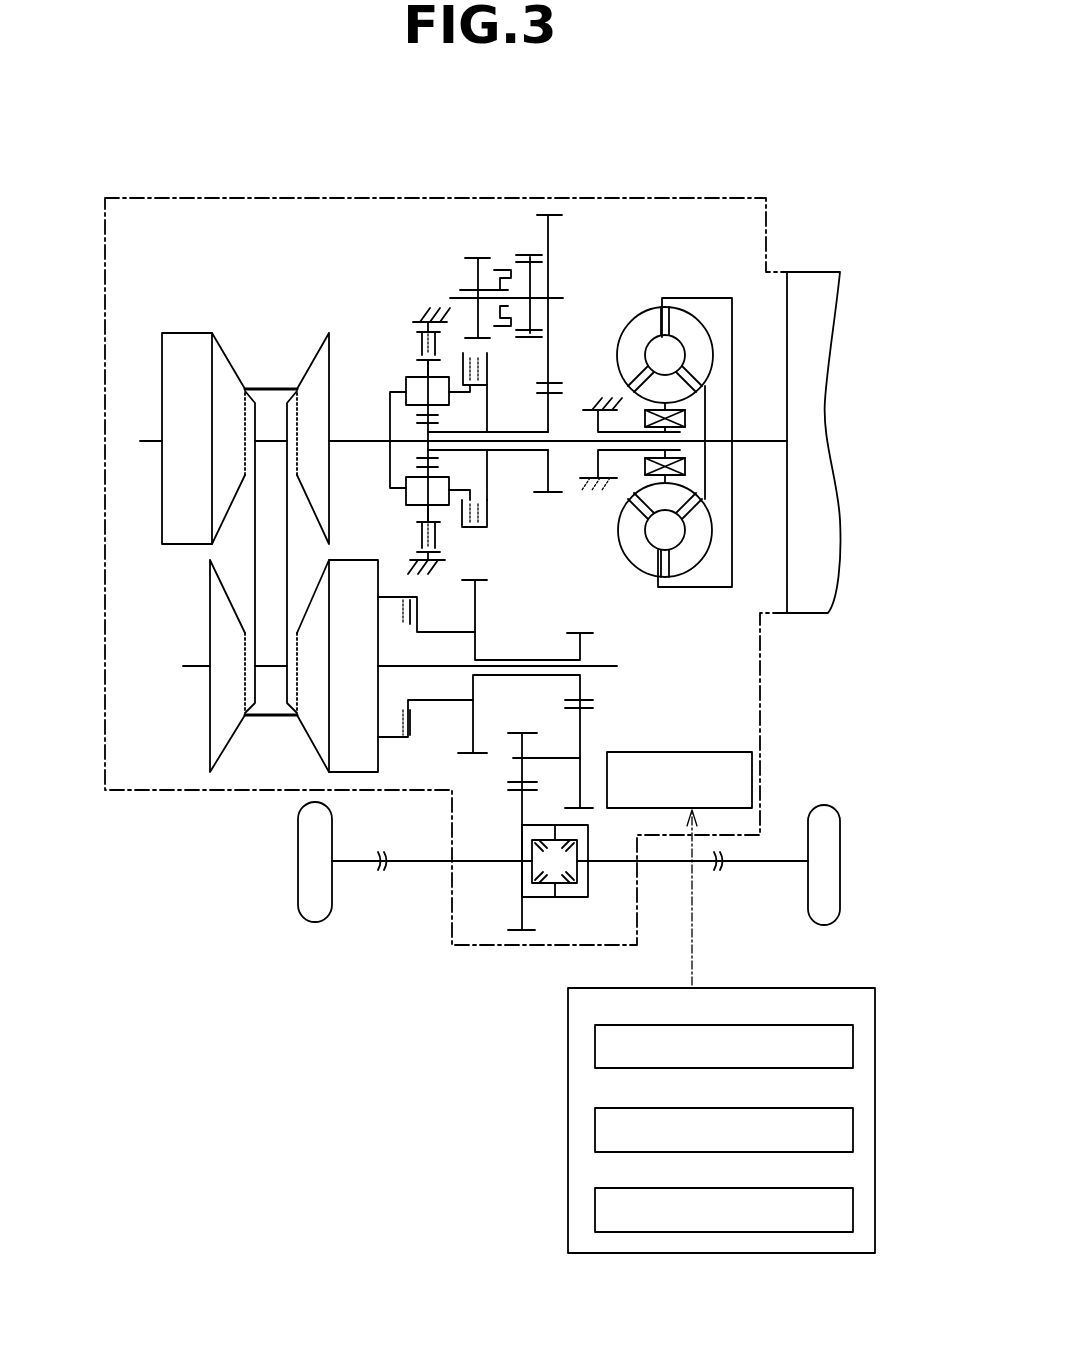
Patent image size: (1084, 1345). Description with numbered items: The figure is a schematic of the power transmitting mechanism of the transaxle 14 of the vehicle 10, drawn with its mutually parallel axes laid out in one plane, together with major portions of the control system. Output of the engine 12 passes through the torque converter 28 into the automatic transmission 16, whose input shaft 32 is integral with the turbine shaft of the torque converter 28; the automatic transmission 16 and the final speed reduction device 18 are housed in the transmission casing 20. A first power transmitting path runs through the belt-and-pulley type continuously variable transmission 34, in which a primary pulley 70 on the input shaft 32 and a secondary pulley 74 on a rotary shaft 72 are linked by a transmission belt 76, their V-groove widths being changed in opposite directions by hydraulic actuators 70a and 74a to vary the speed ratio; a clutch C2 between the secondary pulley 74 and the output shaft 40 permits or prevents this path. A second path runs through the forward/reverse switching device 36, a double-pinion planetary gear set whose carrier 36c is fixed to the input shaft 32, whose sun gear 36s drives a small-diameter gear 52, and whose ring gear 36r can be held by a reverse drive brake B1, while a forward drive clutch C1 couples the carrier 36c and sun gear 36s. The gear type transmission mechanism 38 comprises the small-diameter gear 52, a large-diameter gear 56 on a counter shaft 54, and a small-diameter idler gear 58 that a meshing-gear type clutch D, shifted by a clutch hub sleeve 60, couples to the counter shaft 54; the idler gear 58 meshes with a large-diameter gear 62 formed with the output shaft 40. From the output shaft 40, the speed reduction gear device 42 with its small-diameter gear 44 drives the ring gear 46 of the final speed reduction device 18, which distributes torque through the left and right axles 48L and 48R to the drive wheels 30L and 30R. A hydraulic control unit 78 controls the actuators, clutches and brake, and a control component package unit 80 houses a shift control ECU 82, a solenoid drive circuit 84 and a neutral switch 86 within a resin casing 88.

The vehicle 10 is at (788, 156).
The engine 12 is at (820, 285).
The transaxle 14 is at (200, 178).
The automatic transmission 16 is at (262, 266).
The final speed reduction device 18 is at (560, 900).
The transmission casing 20 is at (308, 195).
The torque converter 28 is at (695, 292).
The left drive wheel 30L is at (302, 884).
The right drive wheel 30R is at (832, 846).
The input shaft 32 is at (358, 435).
The belt-and-pulley type continuously variable transmission 34 is at (192, 310).
The forward/reverse switching device 36 is at (384, 304).
The carrier 36c is at (404, 380).
The sun gear 36s is at (410, 452).
The ring gear 36r is at (417, 532).
The gear type transmission mechanism 38 is at (585, 236).
The output shaft 40 is at (517, 656).
The speed reduction gear device 42 is at (642, 712).
The small-diameter gear 44 is at (519, 731).
The ring gear 46 is at (522, 940).
The left axle 48L is at (412, 866).
The right axle 48R is at (660, 866).
The small-diameter gear 52 is at (552, 496).
The counter shaft 54 is at (455, 295).
The large-diameter gear 56 is at (553, 212).
The small-diameter idler gear 58 is at (468, 255).
The clutch hub sleeve 60 is at (524, 338).
The large-diameter gear 62 is at (474, 760).
The primary pulley 70 is at (195, 560).
The hydraulic actuator 70a is at (170, 405).
The rotary shaft 72 is at (604, 664).
The secondary pulley 74 is at (236, 768).
The hydraulic actuator 74a is at (335, 723).
The transmission belt 76 is at (272, 385).
The hydraulic control unit 78 is at (692, 752).
The control component package unit 80 is at (556, 1128).
The shift control ECU 82 is at (755, 1030).
The solenoid drive circuit 84 is at (755, 1112).
The neutral switch 86 is at (755, 1192).
The resin casing 88 is at (808, 987).
The reverse drive brake B1 is at (422, 342).
The forward drive clutch C1 is at (477, 457).
The clutch C2 is at (426, 685).
The meshing-gear type clutch D is at (512, 236).